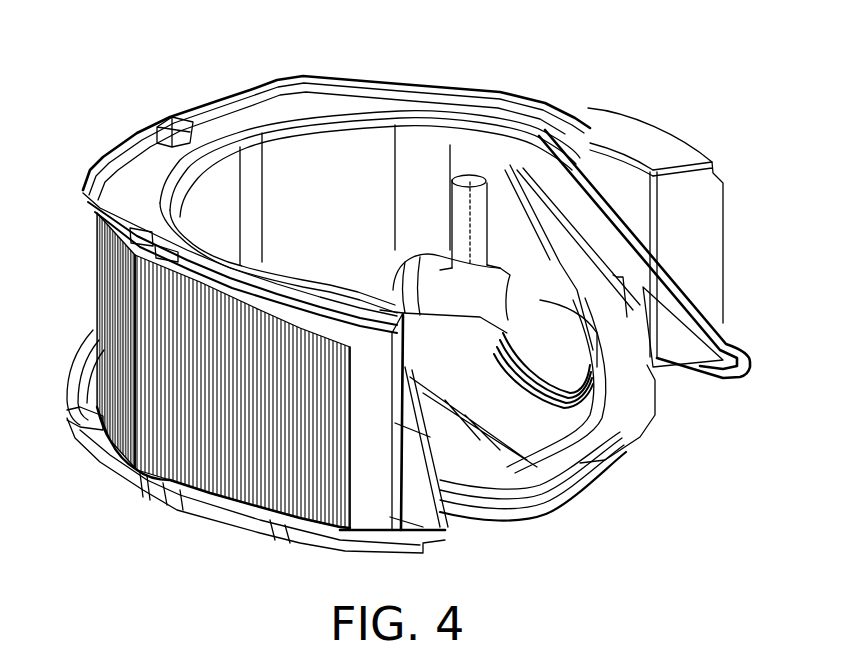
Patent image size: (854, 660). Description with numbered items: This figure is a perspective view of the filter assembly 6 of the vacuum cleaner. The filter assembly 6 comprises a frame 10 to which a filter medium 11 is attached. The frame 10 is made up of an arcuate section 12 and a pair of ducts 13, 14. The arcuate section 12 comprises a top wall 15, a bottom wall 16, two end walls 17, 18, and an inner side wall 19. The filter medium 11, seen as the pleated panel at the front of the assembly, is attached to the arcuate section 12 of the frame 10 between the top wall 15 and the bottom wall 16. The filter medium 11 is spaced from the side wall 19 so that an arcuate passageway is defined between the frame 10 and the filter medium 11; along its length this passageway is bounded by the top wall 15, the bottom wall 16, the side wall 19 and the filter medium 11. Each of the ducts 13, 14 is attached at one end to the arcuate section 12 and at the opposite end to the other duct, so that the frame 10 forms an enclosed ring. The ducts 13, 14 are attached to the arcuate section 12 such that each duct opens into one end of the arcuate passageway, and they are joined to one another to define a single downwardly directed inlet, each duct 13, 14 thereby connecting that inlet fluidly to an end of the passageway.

The filter assembly 6 is at (74, 118).
The frame 10 is at (727, 260).
The filter medium 11 is at (97, 327).
The arcuate section 12 is at (230, 121).
The duct 13 is at (480, 467).
The duct 14 is at (610, 327).
The top wall 15 is at (612, 133).
The bottom wall 16 is at (178, 507).
The end wall 17 is at (393, 423).
The end wall 18 is at (703, 188).
The inner side wall 19 is at (348, 165).